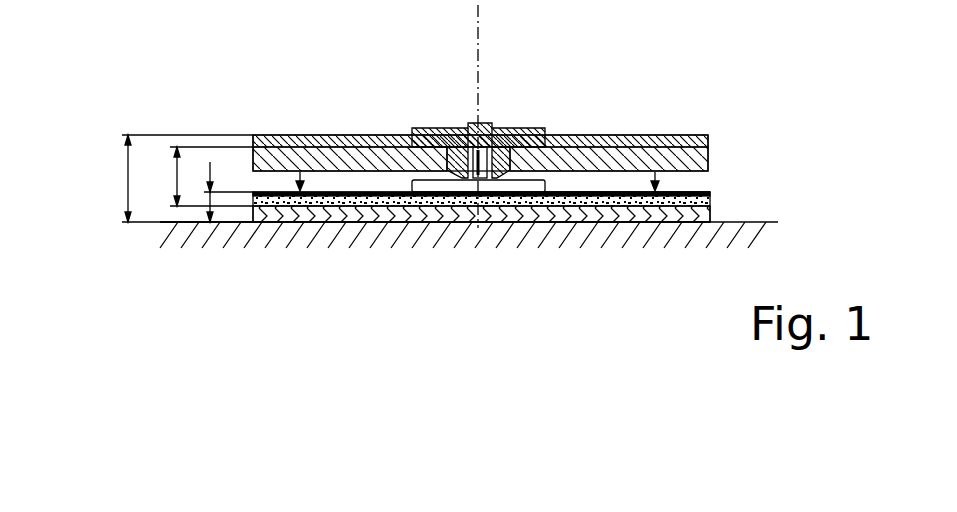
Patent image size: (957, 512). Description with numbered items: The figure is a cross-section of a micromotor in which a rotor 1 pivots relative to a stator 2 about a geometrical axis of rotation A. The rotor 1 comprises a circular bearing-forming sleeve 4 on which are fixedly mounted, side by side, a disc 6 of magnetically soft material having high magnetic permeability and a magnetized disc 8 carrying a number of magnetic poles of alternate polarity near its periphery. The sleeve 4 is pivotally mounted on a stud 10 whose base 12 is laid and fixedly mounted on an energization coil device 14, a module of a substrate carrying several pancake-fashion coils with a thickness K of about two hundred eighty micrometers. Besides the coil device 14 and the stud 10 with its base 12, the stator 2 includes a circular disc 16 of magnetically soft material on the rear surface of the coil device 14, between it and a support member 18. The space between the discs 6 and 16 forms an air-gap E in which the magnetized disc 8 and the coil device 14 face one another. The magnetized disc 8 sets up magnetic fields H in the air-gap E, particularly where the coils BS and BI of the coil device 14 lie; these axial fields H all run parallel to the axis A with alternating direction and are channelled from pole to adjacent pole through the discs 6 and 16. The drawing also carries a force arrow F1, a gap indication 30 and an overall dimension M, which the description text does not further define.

The rotor 1 is at (290, 127).
The stator 2 is at (273, 252).
The bearing-forming sleeve 4 is at (443, 128).
The disc of magnetically soft material 6 is at (590, 135).
The magnetized disc 8 is at (683, 135).
The stud 10 is at (484, 180).
The base 12 is at (427, 192).
The energization coil device 14 is at (712, 206).
The circular disc of magnetically soft material 16 is at (342, 205).
The support member 18 is at (687, 238).
The gap 30 is at (559, 200).
The geometrical axis of rotation A is at (481, 64).
The magnetic fields H is at (327, 135).
The force F1 is at (703, 191).
The coil BS is at (628, 222).
The coil BI is at (411, 283).
The dimension M is at (176, 178).
The air-gap E is at (201, 176).
The thickness K is at (220, 192).